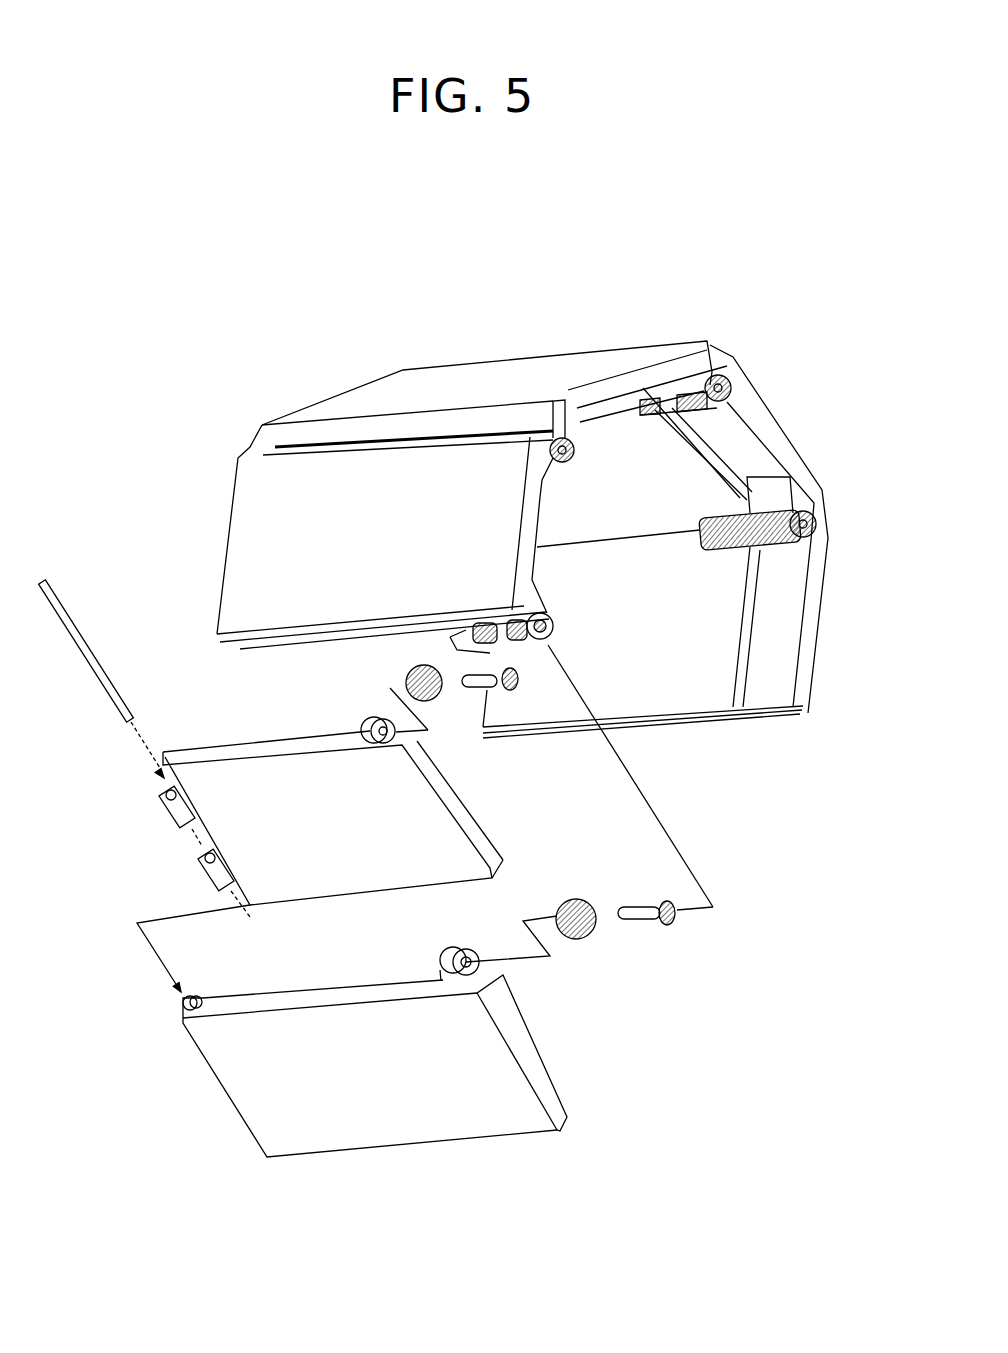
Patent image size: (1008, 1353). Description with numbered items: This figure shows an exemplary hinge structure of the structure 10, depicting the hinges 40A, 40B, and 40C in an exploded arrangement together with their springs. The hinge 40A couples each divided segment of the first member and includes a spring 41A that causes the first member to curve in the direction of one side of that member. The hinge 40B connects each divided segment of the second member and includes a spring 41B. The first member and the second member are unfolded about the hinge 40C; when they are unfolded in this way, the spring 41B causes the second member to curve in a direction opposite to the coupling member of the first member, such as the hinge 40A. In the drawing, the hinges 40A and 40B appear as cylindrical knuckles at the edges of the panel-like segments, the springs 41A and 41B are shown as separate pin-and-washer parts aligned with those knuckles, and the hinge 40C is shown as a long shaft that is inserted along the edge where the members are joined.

The electronic apparatus 10 is at (722, 273).
The hinge 40A is at (563, 436).
The hinge 40B is at (497, 785).
The hinge 40C is at (176, 675).
The spring 41A is at (634, 899).
The spring 41B is at (420, 677).